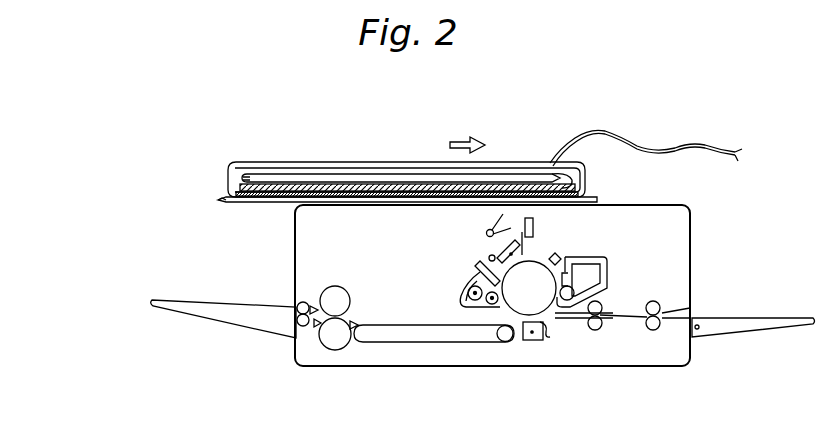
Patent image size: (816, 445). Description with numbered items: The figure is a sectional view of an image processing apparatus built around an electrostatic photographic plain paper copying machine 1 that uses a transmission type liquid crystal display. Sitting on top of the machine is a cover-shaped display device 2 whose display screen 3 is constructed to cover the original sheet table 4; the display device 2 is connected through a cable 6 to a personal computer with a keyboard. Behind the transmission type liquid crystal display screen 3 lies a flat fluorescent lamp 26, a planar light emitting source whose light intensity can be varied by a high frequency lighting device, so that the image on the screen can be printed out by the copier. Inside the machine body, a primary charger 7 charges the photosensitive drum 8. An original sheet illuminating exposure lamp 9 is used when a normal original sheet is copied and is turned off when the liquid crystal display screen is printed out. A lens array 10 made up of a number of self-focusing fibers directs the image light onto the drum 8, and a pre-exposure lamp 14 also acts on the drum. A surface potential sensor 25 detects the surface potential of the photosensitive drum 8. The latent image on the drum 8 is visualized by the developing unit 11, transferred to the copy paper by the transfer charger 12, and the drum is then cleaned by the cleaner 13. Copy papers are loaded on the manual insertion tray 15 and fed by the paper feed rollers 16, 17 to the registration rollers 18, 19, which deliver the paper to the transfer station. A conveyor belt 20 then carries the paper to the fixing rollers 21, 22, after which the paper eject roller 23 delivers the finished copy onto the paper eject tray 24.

The electrostatic photographic plain paper copying machine 1 is at (305, 244).
The cover-shaped display device 2 is at (328, 167).
The display screen 3 is at (282, 198).
The original sheet table 4 is at (222, 201).
The cable 6 is at (672, 143).
The primary charger 7 is at (514, 245).
The photosensitive drum 8 is at (525, 302).
The original sheet illuminating exposure lamp 9 is at (488, 229).
The lens array 10 is at (532, 233).
The developing unit 11 is at (600, 280).
The transfer charger 12 is at (547, 340).
The cleaner 13 is at (478, 303).
The pre-exposure lamp 14 is at (489, 256).
The manual insertion tray 15 is at (743, 330).
The paper feed roller 16 is at (655, 331).
The paper feed roller 17 is at (656, 305).
The registration roller 18 is at (595, 331).
The registration roller 19 is at (603, 314).
The conveyor belt 20 is at (405, 340).
The fixing roller 21 is at (334, 342).
The fixing roller 22 is at (325, 296).
The paper eject roller 23 is at (300, 322).
The paper eject tray 24 is at (220, 315).
The surface potential sensor 25 is at (559, 257).
The flat fluorescent lamp 26 is at (302, 175).